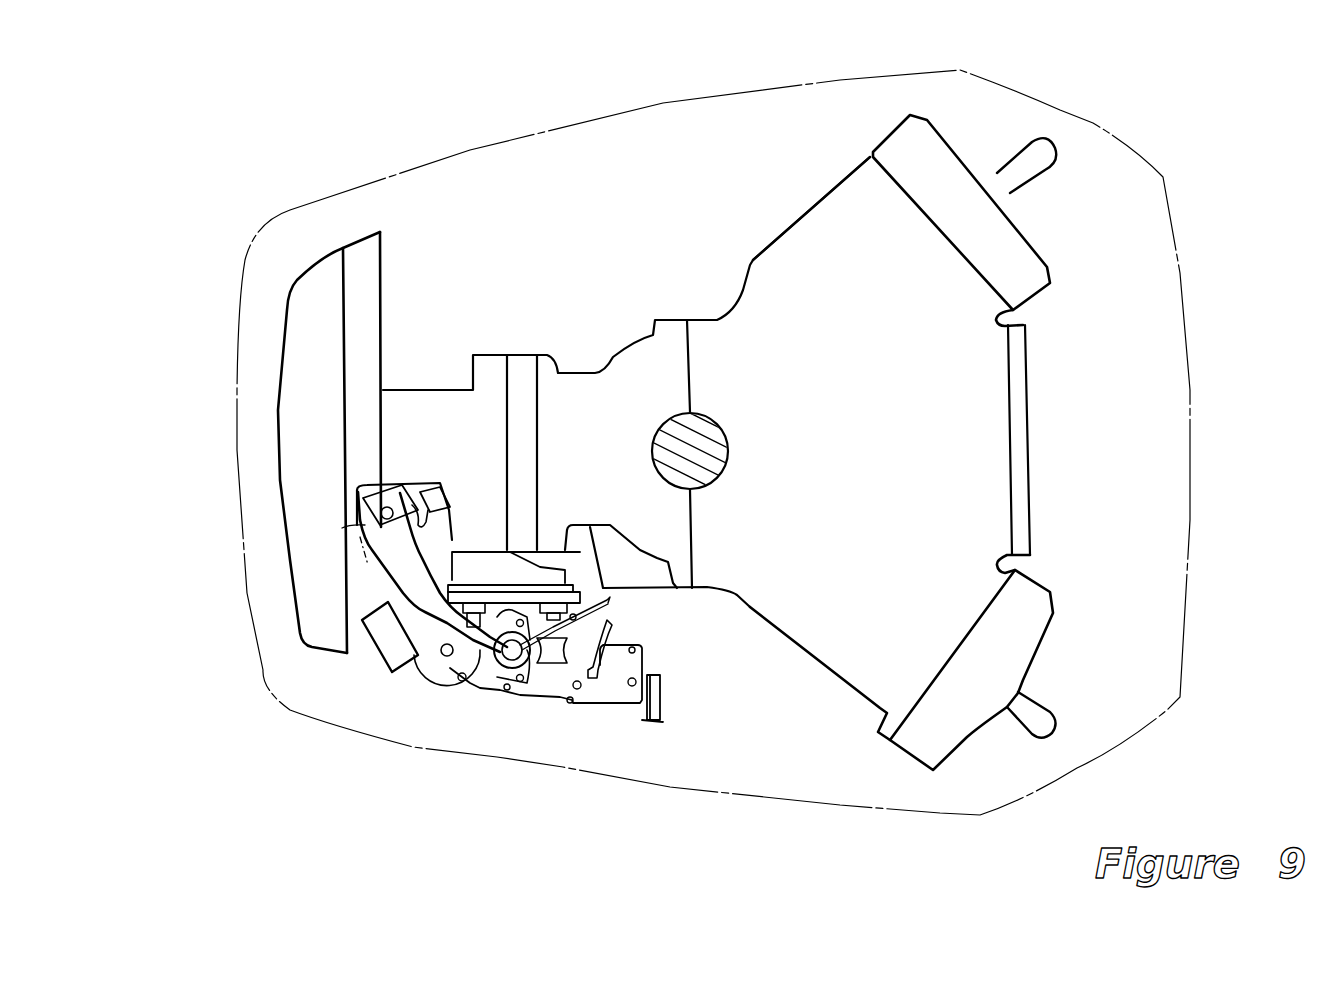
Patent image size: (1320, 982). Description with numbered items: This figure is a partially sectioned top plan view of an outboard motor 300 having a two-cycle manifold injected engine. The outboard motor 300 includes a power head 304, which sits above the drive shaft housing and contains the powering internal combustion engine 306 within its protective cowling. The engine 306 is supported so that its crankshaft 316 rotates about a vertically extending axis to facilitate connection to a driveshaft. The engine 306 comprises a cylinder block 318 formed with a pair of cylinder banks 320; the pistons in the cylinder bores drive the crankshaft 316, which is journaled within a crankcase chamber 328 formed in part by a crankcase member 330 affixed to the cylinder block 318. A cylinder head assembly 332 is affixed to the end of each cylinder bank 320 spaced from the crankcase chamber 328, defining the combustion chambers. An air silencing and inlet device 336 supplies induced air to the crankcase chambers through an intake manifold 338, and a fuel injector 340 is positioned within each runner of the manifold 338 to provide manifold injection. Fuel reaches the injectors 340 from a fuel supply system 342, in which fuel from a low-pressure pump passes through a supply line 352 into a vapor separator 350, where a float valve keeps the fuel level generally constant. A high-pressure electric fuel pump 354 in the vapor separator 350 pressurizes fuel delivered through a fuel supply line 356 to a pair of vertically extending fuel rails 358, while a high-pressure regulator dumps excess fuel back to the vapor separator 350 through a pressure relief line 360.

The outboard motor 300 is at (1217, 278).
The power head 304 is at (1107, 130).
The internal combustion engine 306 is at (983, 430).
The crankshaft 316 is at (723, 423).
The cylinder block 318 is at (810, 237).
The cylinder banks 320 is at (853, 193).
The crankcase chamber 328 is at (673, 372).
The crankcase member 330 is at (617, 367).
The cylinder head assembly 332 is at (1015, 232).
The air silencing and inlet device 336 is at (355, 237).
The intake manifold 338 is at (435, 383).
The fuel injector 340 is at (430, 487).
The fuel supply system 342 is at (500, 728).
The vapor separator 350 is at (628, 712).
The supply line 352 is at (668, 702).
The high-pressure electric fuel pump 354 is at (457, 627).
The fuel supply line 356 is at (468, 635).
The fuel rails 358 is at (342, 528).
The pressure relief line 360 is at (383, 632).